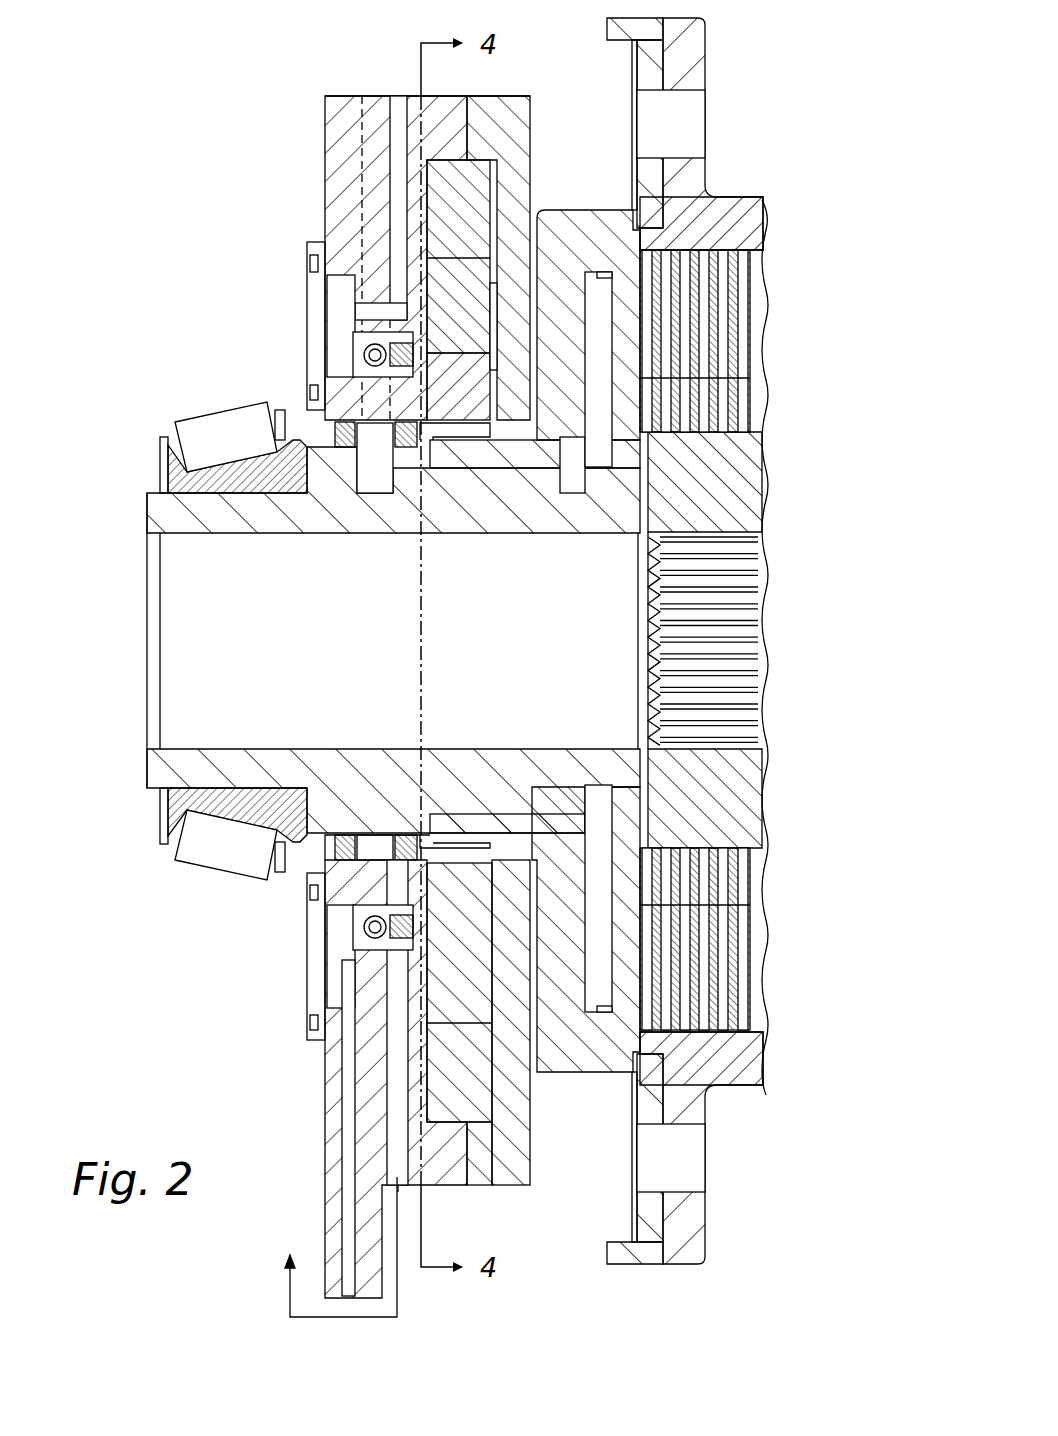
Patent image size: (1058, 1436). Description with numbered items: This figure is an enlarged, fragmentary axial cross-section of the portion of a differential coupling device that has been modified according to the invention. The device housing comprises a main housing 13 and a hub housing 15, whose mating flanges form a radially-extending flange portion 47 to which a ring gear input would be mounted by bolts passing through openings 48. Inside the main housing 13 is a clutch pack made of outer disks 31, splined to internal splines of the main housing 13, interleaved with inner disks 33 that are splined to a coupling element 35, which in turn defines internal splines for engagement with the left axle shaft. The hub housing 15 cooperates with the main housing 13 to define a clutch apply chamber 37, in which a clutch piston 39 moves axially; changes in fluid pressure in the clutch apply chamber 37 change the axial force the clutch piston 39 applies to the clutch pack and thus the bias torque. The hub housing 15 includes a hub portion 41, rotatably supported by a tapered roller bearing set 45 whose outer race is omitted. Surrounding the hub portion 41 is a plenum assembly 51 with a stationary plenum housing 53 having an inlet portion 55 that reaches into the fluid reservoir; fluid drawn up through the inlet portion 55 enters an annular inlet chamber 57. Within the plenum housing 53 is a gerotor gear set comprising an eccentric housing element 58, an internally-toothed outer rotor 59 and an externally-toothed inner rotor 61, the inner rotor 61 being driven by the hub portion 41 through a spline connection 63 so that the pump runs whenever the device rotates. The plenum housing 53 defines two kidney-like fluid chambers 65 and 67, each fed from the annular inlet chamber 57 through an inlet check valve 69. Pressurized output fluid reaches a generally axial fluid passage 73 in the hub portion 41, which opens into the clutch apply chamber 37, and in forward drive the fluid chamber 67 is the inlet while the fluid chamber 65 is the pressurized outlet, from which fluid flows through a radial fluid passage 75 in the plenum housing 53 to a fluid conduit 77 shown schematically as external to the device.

The main housing 13 is at (735, 205).
The hub housing 15 is at (578, 1045).
The outer disks 31 is at (745, 340).
The inner disks 33 is at (725, 940).
The coupling element 35 is at (740, 488).
The clutch apply chamber 37 is at (598, 855).
The clutch piston 39 is at (612, 335).
The hub portion 41 is at (330, 755).
The tapered roller bearing set 45 is at (208, 884).
The flange portion 47 is at (680, 1262).
The openings 48 is at (700, 125).
The plenum assembly 51 is at (262, 150).
The plenum housing 53 is at (515, 98).
The inlet portion 55 is at (330, 1180).
The annular inlet chamber 57 is at (332, 960).
The eccentric housing element 58 is at (480, 1082).
The outer rotor 59 is at (455, 985).
The inner rotor 61 is at (468, 420).
The spline connection 63 is at (464, 845).
The fluid chamber 65 is at (418, 972).
The fluid chamber 67 is at (415, 300).
The inlet check valve 69 is at (365, 352).
The axial fluid passage 73 is at (387, 487).
The radial fluid passage 75 is at (395, 1062).
The fluid conduit 77 is at (290, 1300).